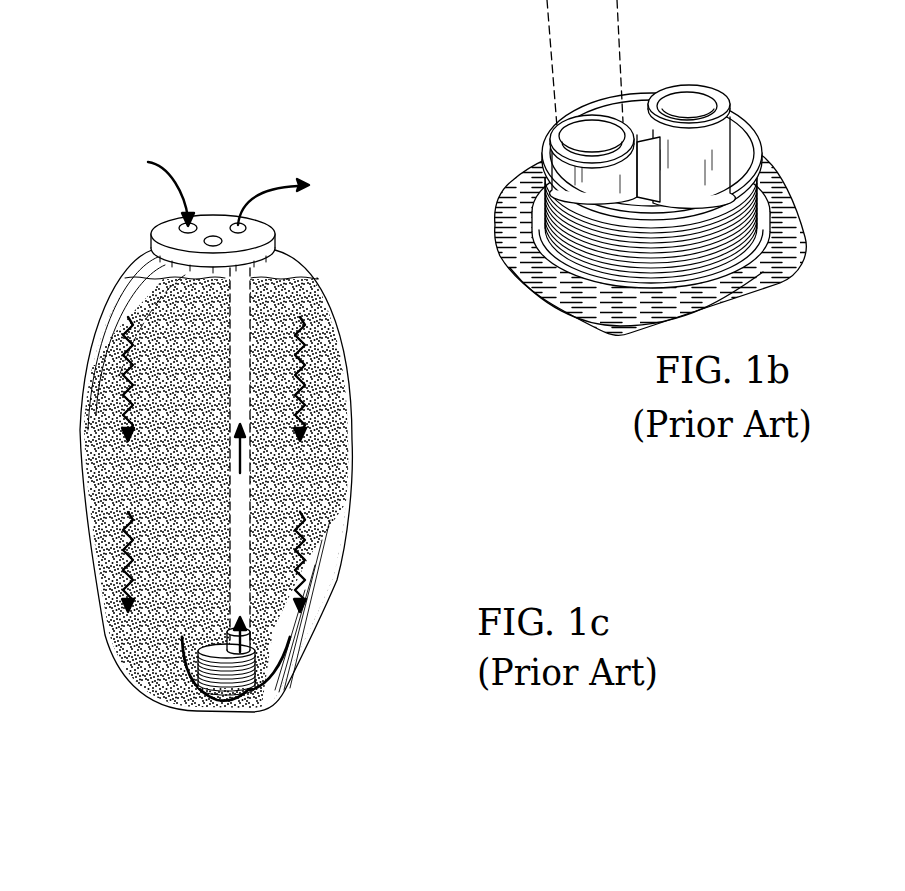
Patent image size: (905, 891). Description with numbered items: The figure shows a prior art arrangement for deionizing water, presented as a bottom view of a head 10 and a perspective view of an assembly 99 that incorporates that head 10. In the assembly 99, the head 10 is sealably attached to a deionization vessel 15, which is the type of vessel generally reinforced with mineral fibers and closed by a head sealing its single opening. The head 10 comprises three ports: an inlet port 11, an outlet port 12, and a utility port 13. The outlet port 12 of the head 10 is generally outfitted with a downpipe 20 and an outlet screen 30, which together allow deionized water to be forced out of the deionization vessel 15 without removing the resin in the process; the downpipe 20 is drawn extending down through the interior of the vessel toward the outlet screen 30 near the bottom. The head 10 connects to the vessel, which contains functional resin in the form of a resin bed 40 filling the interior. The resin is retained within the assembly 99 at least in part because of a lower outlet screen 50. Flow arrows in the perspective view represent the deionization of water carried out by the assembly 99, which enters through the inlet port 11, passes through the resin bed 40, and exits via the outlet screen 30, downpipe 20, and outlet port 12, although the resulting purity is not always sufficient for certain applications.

In FIG. 1c, the assembly 99 is at (320, 120).
In FIG. 1c, the head 10 is at (215, 222).
In FIG. 1b, the head 10 is at (697, 53).
In FIG. 1c, the inlet port 11 is at (198, 226).
In FIG. 1c, the outlet port 12 is at (246, 228).
In FIG. 1c, the utility port 13 is at (215, 241).
In FIG. 1c, the deionization vessel 15 is at (98, 307).
In FIG. 1c, the downpipe 20 is at (237, 487).
In FIG. 1b, the downpipe 20 is at (563, 60).
In FIG. 1c, the outlet screen 30 is at (227, 652).
In FIG. 1c, the resin bed 40 is at (313, 485).
In FIG. 1c, the lower outlet screen 50 is at (257, 668).